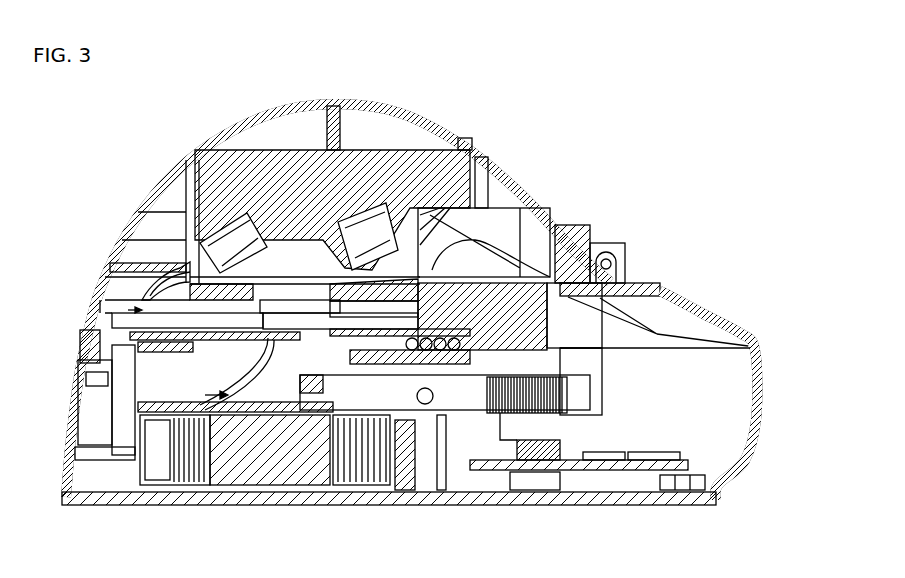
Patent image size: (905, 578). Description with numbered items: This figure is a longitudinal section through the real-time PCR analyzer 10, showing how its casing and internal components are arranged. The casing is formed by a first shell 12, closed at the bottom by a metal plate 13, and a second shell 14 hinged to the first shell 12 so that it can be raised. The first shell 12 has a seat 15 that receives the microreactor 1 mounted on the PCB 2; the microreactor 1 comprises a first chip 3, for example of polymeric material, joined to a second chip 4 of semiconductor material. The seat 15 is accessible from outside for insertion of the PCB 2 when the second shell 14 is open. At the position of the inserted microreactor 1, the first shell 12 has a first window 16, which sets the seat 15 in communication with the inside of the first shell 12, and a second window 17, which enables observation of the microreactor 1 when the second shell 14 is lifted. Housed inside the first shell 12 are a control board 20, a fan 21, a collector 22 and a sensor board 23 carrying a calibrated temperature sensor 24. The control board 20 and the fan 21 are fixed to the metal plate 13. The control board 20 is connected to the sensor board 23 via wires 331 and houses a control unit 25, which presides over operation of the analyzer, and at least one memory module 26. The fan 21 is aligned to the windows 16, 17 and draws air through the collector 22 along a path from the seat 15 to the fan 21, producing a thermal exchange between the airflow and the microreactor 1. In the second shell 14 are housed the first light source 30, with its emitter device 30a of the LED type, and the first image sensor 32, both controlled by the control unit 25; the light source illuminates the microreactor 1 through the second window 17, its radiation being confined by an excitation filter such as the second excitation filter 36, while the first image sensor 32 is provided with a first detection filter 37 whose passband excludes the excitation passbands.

The real-time PCR analyzer 10 is at (586, 113).
The first shell 12 is at (758, 407).
The metal plate 13 is at (127, 507).
The second shell 14 is at (524, 173).
The seat 15 is at (100, 304).
The first window 16 is at (266, 347).
The second window 17 is at (172, 262).
The PCB 2 is at (112, 321).
The microreactor 1 is at (283, 285).
The first chip 3 is at (293, 300).
The second chip 4 is at (320, 323).
The control board 20 is at (578, 470).
The fan 21 is at (292, 470).
The collector 22 is at (77, 402).
The sensor board 23 is at (596, 368).
The calibrated temperature sensor 24 is at (316, 392).
The control unit 25 is at (648, 455).
The memory module 26 is at (598, 455).
The first light source 30 is at (222, 140).
The emitter device 30a is at (194, 208).
The first image sensor 32 is at (366, 232).
The wires 331 is at (500, 438).
The second excitation filter 36 is at (232, 205).
The first detection filter 37 is at (343, 168).